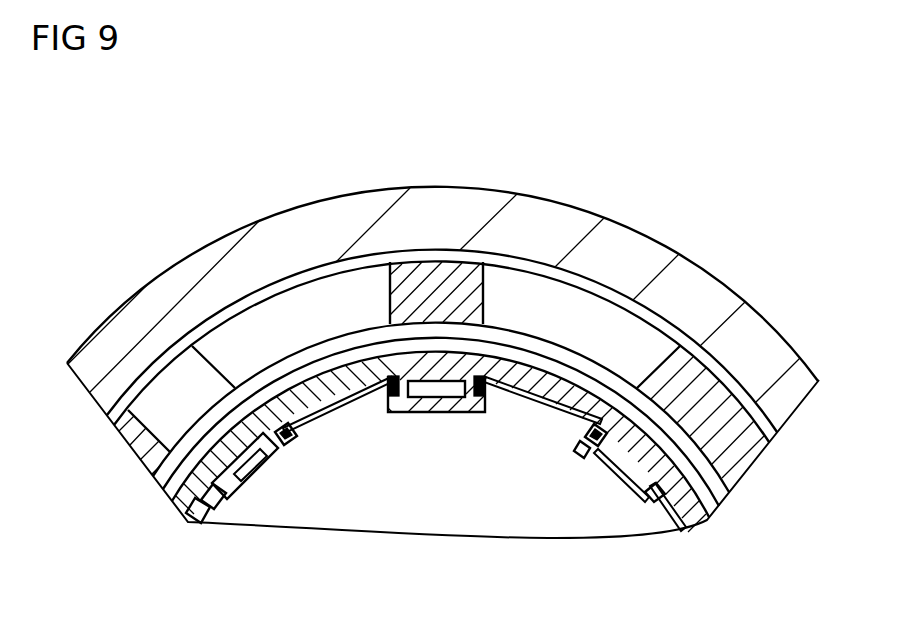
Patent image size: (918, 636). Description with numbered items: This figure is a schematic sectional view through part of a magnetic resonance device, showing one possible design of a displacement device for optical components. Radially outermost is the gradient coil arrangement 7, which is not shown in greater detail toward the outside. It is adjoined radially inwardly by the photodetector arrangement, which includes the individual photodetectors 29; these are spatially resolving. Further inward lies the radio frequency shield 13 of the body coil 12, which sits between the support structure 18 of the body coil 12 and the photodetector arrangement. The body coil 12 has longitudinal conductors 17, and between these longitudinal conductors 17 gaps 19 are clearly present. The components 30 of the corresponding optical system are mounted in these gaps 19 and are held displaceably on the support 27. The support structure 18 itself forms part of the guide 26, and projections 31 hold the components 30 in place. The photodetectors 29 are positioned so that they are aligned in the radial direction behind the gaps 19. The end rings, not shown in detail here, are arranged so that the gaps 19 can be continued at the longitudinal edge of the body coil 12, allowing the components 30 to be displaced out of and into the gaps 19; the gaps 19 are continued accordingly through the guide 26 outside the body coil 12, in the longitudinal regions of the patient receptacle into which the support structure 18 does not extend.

The gradient coil arrangement 7 is at (440, 207).
The photodetector 29 is at (612, 320).
The radio frequency shield 13 is at (723, 505).
The projection 31 is at (396, 410).
The longitudinal conductor 17 is at (430, 402).
The support 27 is at (476, 395).
The component 30 is at (358, 390).
The gap 19 is at (578, 440).
The support structure 18 is at (190, 500).
The guide 26 is at (635, 494).
The body coil 12 is at (583, 460).